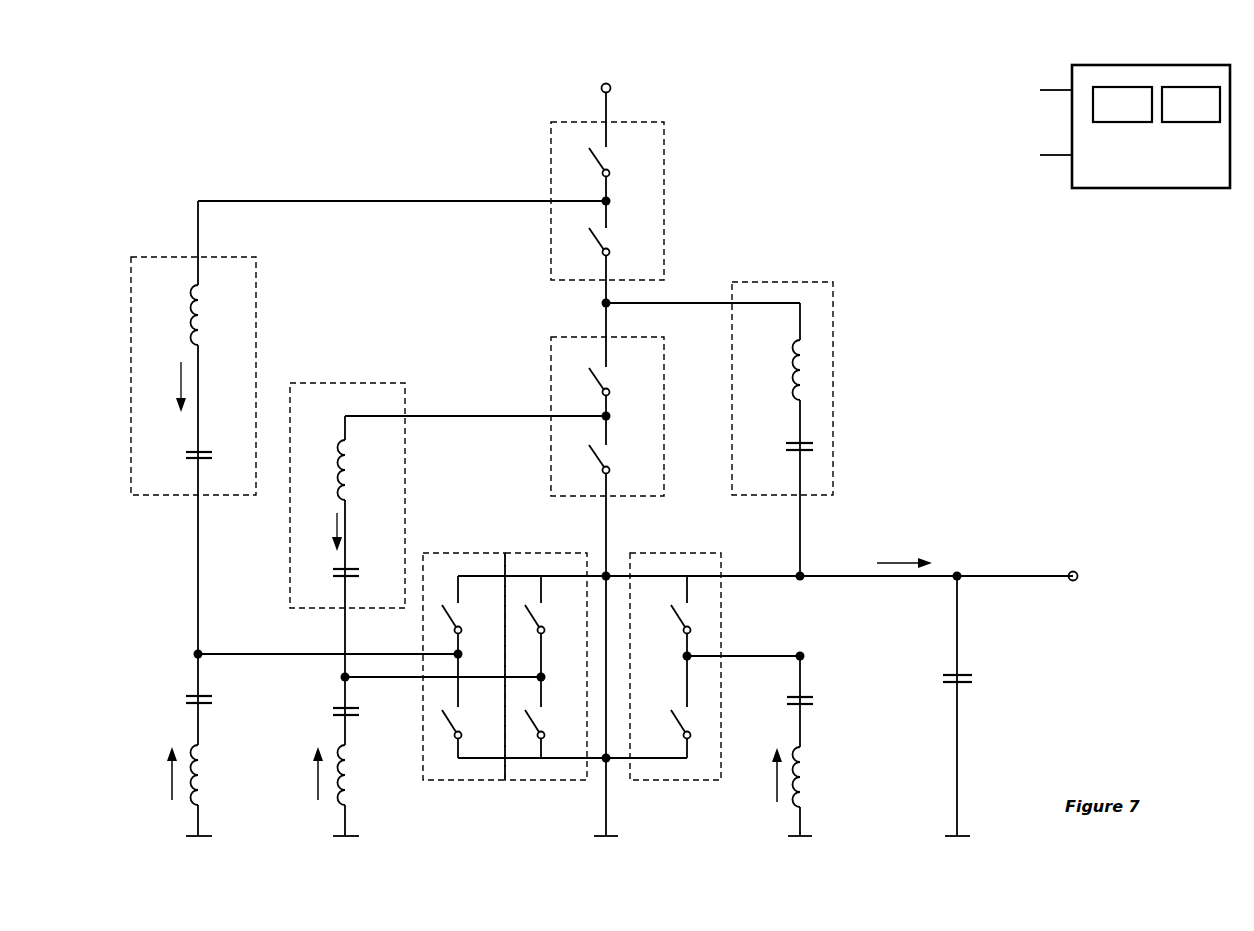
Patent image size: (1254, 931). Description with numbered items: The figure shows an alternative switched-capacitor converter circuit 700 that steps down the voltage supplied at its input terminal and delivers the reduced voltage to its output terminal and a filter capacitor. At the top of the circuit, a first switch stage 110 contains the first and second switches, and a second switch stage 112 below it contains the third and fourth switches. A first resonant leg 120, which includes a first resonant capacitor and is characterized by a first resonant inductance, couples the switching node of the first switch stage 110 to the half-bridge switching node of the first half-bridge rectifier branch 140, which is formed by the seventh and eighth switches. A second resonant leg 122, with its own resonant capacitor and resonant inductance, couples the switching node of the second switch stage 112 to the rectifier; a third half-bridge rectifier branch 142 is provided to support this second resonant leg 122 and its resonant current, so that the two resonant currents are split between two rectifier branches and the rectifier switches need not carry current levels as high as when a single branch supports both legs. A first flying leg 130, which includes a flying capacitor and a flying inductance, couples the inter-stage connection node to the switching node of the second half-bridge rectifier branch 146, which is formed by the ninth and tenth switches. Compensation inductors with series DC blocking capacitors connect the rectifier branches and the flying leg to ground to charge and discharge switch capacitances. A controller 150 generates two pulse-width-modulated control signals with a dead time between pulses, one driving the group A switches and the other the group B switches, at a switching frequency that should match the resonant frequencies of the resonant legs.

The alternative SCC circuit 700 is at (236, 86).
The first switch stage 110 is at (607, 202).
The second switch stage 112 is at (607, 439).
The first resonant leg 120 is at (193, 427).
The second resonant leg 122 is at (347, 519).
The first flying leg 130 is at (782, 420).
The first half-bridge rectifier branch 140 is at (464, 656).
The third half-bridge rectifier branch 142 is at (546, 656).
The second half-bridge rectifier branch 146 is at (675, 656).
The controller 150 is at (1103, 118).